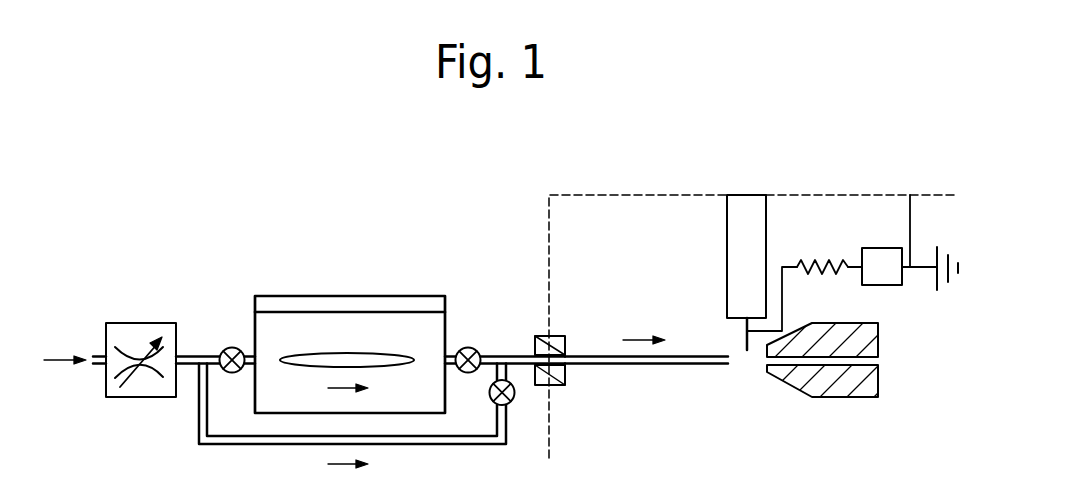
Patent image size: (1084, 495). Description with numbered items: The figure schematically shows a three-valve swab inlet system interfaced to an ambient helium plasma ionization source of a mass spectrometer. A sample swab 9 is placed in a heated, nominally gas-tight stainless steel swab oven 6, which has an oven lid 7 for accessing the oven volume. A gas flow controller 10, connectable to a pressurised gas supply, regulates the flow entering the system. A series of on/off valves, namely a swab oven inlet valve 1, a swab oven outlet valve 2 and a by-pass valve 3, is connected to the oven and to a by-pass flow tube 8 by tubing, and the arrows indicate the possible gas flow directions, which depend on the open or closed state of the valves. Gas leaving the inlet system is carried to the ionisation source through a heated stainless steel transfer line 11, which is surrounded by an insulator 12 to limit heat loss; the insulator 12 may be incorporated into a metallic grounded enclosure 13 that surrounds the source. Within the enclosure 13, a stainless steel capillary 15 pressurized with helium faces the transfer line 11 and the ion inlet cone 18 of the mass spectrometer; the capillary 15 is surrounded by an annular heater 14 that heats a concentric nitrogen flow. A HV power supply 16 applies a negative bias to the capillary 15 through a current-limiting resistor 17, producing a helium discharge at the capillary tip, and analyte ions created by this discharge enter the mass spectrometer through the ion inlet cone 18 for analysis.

The swab oven inlet valve 1 is at (232, 348).
The swab oven outlet valve 2 is at (468, 348).
The by-pass valve 3 is at (513, 403).
The swab oven 6 is at (255, 325).
The oven lid 7 is at (422, 296).
The by-pass flow tube 8 is at (199, 431).
The sample swab 9 is at (340, 353).
The gas flow controller 10 is at (145, 323).
The transfer line 11 is at (650, 366).
The insulator 12 is at (542, 336).
The grounded enclosure 13 is at (590, 193).
The annular heater 14 is at (727, 252).
The capillary 15 is at (747, 340).
The HV power supply 16 is at (880, 248).
The current-limiting resistor 17 is at (828, 260).
The ion inlet cone 18 is at (790, 383).